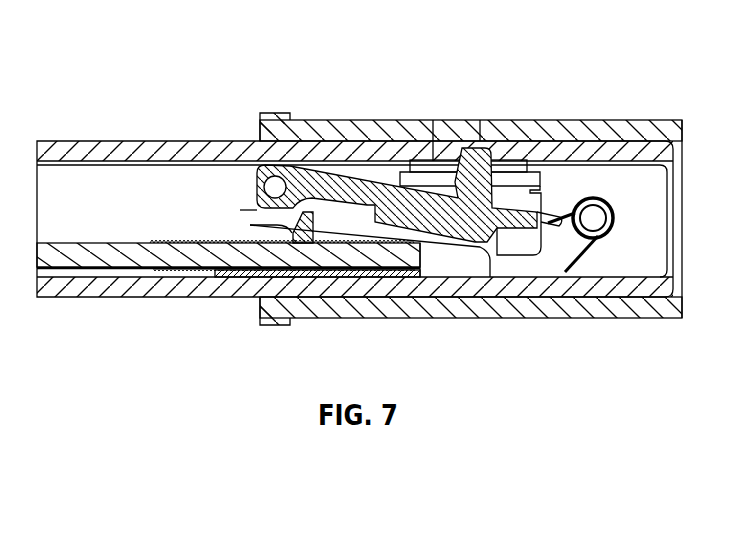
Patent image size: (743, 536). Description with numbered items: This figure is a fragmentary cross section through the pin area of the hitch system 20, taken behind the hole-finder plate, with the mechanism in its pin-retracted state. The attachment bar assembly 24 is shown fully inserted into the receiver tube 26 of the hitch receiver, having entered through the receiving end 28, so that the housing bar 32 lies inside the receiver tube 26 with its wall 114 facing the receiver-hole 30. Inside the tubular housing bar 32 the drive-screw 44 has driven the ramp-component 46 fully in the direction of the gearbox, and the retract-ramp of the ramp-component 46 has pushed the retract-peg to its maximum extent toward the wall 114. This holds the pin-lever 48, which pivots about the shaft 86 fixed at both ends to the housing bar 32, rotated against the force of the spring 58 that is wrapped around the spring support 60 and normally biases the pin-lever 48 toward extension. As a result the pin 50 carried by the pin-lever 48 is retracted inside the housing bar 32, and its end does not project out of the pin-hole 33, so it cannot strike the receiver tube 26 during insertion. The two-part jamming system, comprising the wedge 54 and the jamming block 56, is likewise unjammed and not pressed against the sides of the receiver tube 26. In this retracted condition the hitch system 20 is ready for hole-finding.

The hitch system 20 is at (308, 70).
The attachment bar assembly 24 is at (175, 132).
The receiver tube 26 is at (567, 135).
The receiving end 28 is at (258, 126).
The receiver-hole 30 is at (437, 125).
The housing bar 32 is at (137, 292).
The pin-hole 33 is at (478, 142).
The drive-screw 44 is at (393, 252).
The ramp-component 46 is at (297, 286).
The pin-lever 48 is at (436, 226).
The pin 50 is at (518, 160).
The wedge 54 is at (517, 237).
The jamming block 56 is at (515, 168).
The spring 58 is at (594, 243).
The spring support 60 is at (604, 200).
The shaft 86 is at (284, 180).
The wall 114 is at (376, 128).